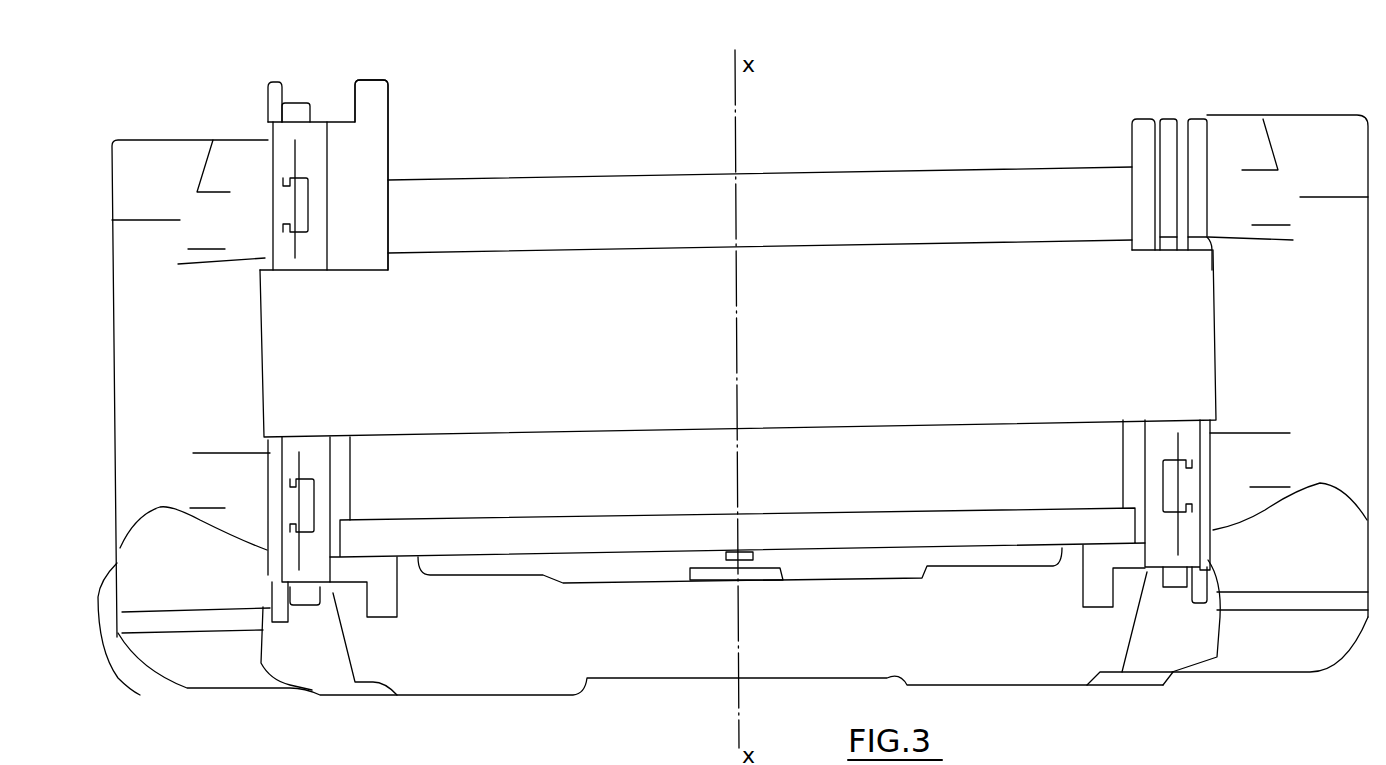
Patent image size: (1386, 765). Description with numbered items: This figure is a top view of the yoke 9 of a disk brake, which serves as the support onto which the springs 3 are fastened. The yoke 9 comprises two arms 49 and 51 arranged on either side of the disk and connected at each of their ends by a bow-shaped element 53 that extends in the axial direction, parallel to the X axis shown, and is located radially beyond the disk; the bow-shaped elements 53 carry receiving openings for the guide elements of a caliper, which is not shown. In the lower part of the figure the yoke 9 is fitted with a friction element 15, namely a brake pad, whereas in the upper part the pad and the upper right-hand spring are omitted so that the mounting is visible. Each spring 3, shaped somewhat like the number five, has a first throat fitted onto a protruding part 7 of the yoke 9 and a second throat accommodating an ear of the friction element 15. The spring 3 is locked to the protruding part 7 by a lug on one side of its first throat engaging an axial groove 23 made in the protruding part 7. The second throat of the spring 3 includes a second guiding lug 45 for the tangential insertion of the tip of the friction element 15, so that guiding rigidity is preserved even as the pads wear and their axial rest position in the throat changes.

The spring 3 is at (313, 262).
The protruding part 7 is at (1146, 95).
The yoke 9 is at (930, 140).
The friction element 15 is at (867, 425).
The axial groove 23 is at (1182, 128).
The second guiding lug 45 is at (390, 128).
The arm 49 is at (528, 695).
The arm 51 is at (510, 177).
The bow-shaped element 53 is at (1212, 348).